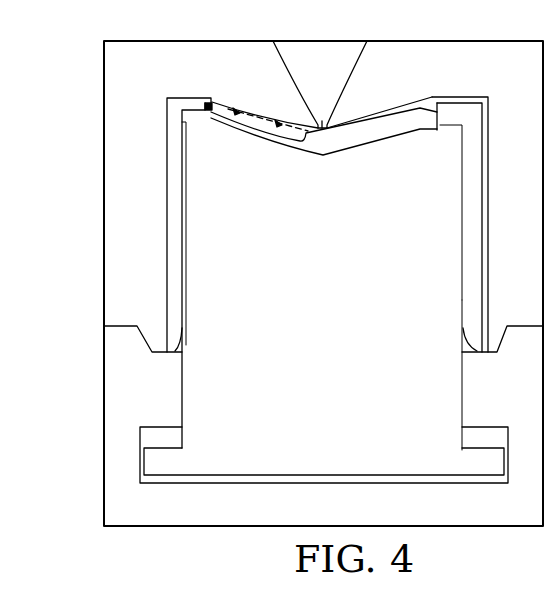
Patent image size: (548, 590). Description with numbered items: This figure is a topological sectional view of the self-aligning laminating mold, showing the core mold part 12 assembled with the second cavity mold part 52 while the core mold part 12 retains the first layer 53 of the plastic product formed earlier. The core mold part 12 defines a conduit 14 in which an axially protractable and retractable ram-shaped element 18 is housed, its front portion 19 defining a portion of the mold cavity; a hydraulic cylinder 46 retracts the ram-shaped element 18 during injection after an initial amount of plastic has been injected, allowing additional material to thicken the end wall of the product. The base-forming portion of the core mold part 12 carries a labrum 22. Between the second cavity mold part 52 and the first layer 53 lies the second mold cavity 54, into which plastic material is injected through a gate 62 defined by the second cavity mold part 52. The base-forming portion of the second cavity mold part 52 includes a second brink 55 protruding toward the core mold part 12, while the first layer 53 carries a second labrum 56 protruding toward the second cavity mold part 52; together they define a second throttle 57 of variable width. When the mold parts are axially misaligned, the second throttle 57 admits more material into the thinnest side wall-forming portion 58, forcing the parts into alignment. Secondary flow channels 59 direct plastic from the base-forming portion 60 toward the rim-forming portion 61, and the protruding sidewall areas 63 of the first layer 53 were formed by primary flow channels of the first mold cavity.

The core mold part 12 is at (193, 295).
The conduit 14 is at (460, 393).
The ram-shaped element 18 is at (450, 267).
The front portion 19 is at (370, 142).
The labrum 22 is at (440, 128).
The hydraulic cylinder 46 is at (143, 438).
The second cavity mold part 52 is at (108, 67).
The first layer 53 is at (185, 218).
The second mold cavity 54 is at (181, 99).
The second brink 55 is at (215, 102).
The second labrum 56 is at (208, 100).
The second throttle 57 is at (209, 113).
The side wall-forming portion 58 is at (485, 152).
The secondary flow channels 59 is at (168, 187).
The base-forming portion 60 is at (263, 116).
The rim-forming portion 61 is at (183, 334).
The gate 62 is at (322, 125).
The protruding sidewall areas 63 is at (466, 220).